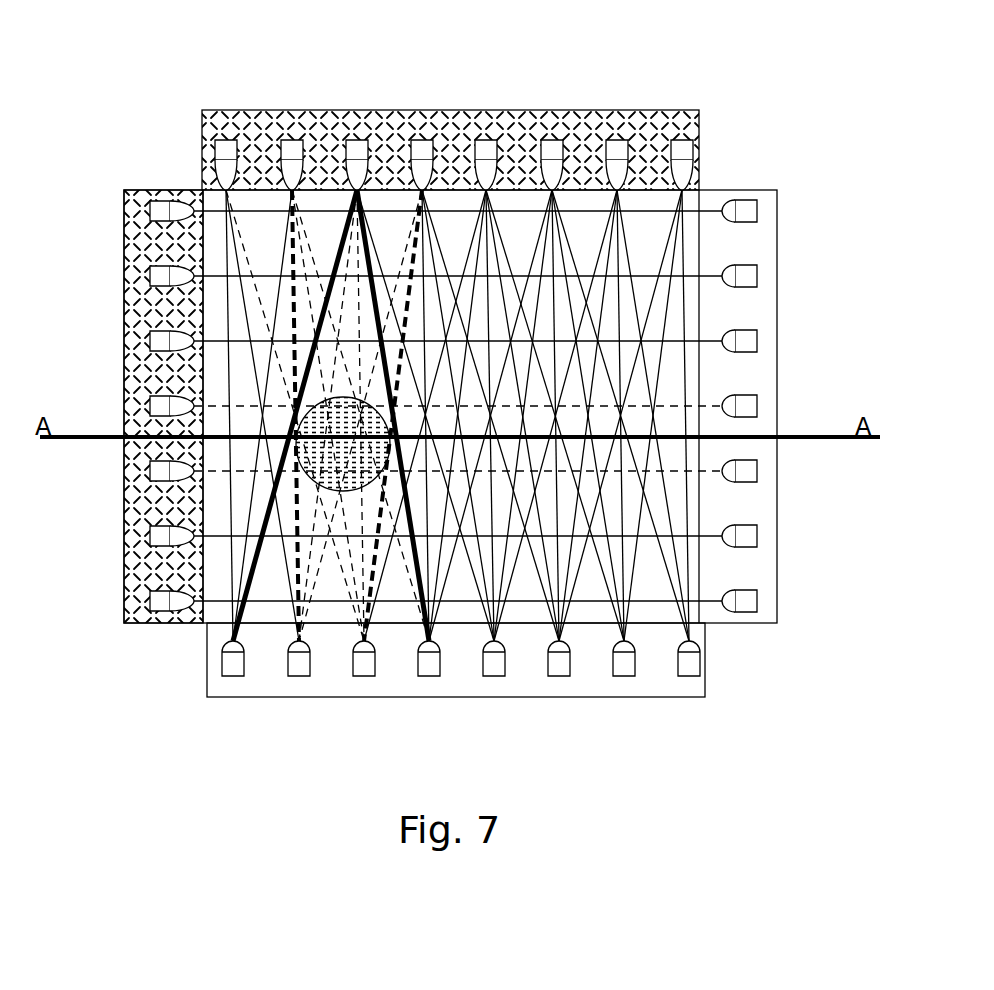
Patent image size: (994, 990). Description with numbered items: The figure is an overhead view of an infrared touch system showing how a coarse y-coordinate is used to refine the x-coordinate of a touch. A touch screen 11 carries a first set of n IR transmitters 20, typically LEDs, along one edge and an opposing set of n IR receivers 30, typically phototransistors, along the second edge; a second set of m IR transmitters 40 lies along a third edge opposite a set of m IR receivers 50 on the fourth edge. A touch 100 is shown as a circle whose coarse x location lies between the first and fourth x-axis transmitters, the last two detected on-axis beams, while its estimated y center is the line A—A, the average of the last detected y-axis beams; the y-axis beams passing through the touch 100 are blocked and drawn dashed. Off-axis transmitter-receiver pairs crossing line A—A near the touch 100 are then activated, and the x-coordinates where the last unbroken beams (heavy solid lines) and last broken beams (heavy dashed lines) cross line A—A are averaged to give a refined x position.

The touch screen 11 is at (531, 225).
The IR transmitters 20 is at (454, 120).
The IR receivers 30 is at (457, 692).
The IR transmitters 40 is at (114, 406).
The IR receivers 50 is at (796, 406).
The touch 100 is at (318, 484).